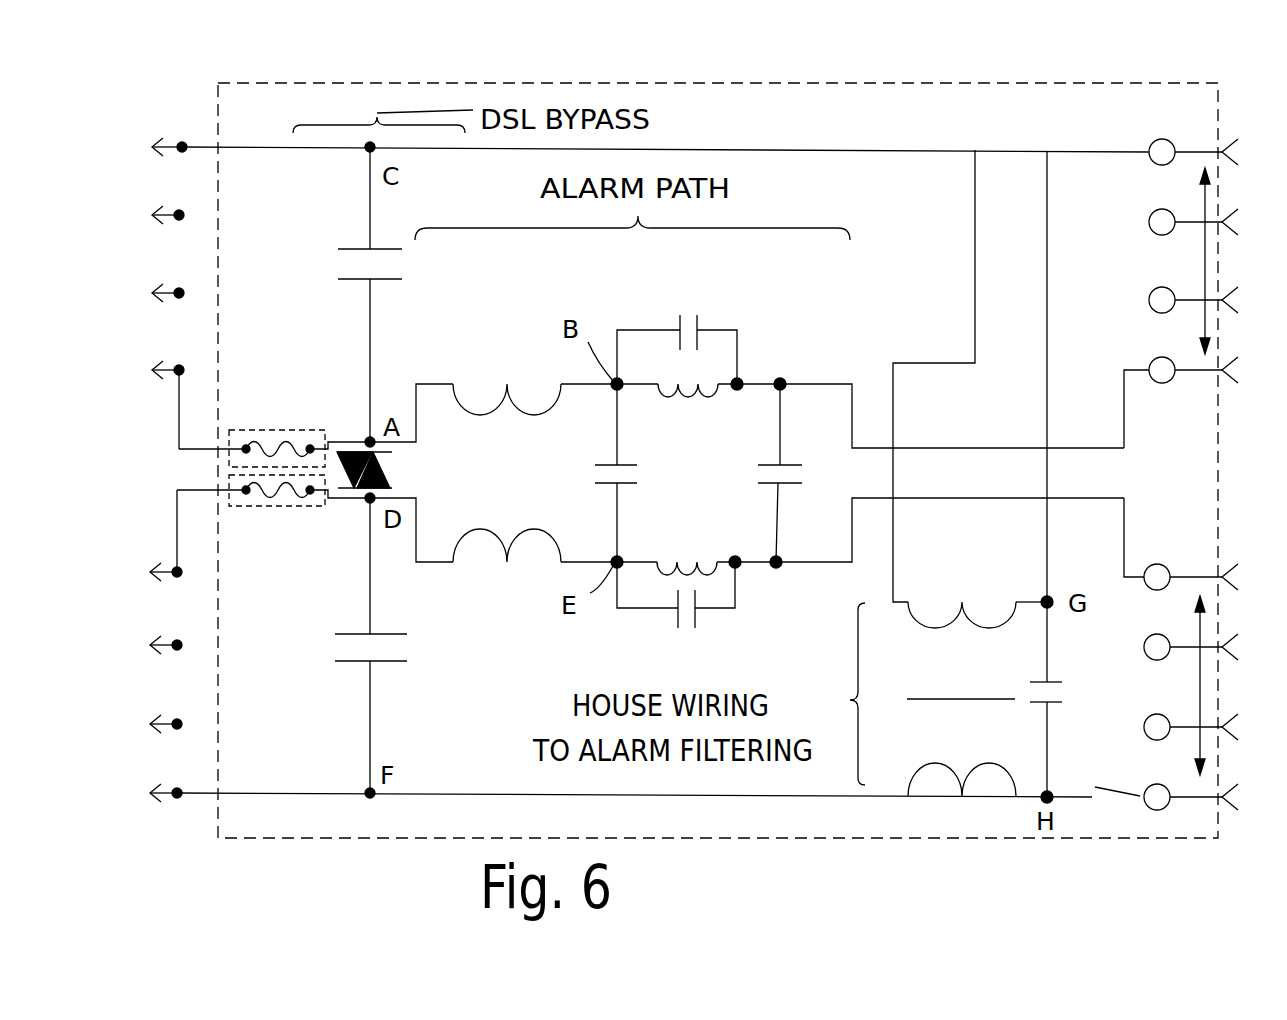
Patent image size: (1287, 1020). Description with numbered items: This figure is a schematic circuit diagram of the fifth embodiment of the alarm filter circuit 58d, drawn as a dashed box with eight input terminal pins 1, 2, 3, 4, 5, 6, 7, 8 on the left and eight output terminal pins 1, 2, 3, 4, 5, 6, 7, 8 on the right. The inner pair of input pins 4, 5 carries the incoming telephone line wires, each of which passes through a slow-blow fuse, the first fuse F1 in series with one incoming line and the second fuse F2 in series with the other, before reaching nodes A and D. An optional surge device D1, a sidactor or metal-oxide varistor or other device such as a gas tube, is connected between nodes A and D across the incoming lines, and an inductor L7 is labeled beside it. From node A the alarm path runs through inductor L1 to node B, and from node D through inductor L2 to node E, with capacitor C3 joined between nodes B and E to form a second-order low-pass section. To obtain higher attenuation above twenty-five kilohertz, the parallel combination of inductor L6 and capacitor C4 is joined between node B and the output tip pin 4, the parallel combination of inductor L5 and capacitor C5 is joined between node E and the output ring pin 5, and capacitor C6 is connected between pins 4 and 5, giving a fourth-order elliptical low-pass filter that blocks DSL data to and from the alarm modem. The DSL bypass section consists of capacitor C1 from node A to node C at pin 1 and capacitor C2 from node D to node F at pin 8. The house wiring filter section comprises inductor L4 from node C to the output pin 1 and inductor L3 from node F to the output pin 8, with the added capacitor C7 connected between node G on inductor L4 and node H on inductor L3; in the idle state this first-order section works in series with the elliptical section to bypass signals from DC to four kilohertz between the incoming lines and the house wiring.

The alarm filter circuit 58d is at (1103, 98).
The capacitor C1 is at (350, 263).
The capacitor C2 is at (352, 644).
The capacitor C3 is at (592, 473).
The capacitor C4 is at (677, 317).
The capacitor C5 is at (680, 615).
The capacitor C6 is at (797, 473).
The capacitor C7 is at (1046, 673).
The inductor L1 is at (535, 363).
The inductor L2 is at (535, 581).
The inductor L3 is at (965, 799).
The inductor L4 is at (977, 581).
The inductor L5 is at (696, 531).
The inductor L6 is at (698, 427).
The inductor L7 is at (432, 473).
The sidactor or metal-oxide varistor D1 is at (383, 473).
The first slow-blow fuse F1 is at (274, 434).
The second slow-blow fuse F2 is at (273, 509).
The terminal pin 1 is at (695, 166).
The terminal 2 is at (695, 233).
The terminal 3 is at (695, 307).
The tip terminal pin 4 is at (695, 403).
The ring terminal pin 5 is at (694, 540).
The terminal 6 is at (694, 641).
The terminal 7 is at (694, 719).
The terminal pin 8 is at (694, 780).